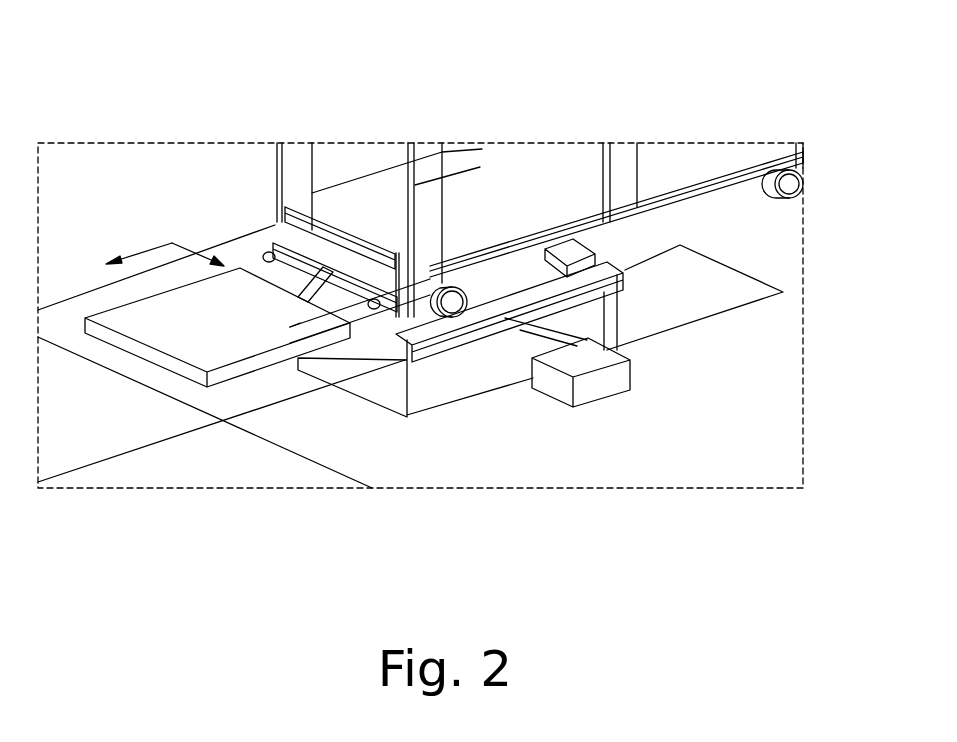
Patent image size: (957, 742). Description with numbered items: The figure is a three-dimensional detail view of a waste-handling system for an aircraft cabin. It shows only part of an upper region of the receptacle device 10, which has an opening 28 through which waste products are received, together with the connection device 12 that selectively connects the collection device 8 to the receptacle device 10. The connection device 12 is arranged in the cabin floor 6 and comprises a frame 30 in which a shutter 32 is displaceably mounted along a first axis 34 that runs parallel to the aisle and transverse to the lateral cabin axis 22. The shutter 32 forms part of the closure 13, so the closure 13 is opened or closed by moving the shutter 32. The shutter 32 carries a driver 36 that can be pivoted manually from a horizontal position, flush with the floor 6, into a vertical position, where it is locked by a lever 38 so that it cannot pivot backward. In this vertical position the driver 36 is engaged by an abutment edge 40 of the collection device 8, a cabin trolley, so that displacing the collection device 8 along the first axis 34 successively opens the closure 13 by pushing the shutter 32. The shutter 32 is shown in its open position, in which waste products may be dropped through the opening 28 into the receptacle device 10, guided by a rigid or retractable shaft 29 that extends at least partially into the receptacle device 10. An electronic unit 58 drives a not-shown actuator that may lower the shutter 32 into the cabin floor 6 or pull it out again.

The cabin floor 6 is at (607, 263).
The collection device 8 is at (300, 173).
The receptacle device 10 is at (692, 441).
The connection device 12 is at (687, 250).
The closure 13 is at (453, 362).
The lateral cabin axis 22 is at (198, 245).
The opening 28 is at (430, 382).
The shaft 29 is at (398, 395).
The frame 30 is at (468, 328).
The shutter 32 is at (247, 335).
The first axis 34 is at (139, 240).
The driver 36 is at (340, 292).
The lever 38 is at (313, 287).
The abutment edge 40 is at (381, 270).
The electronic unit 58 is at (598, 382).